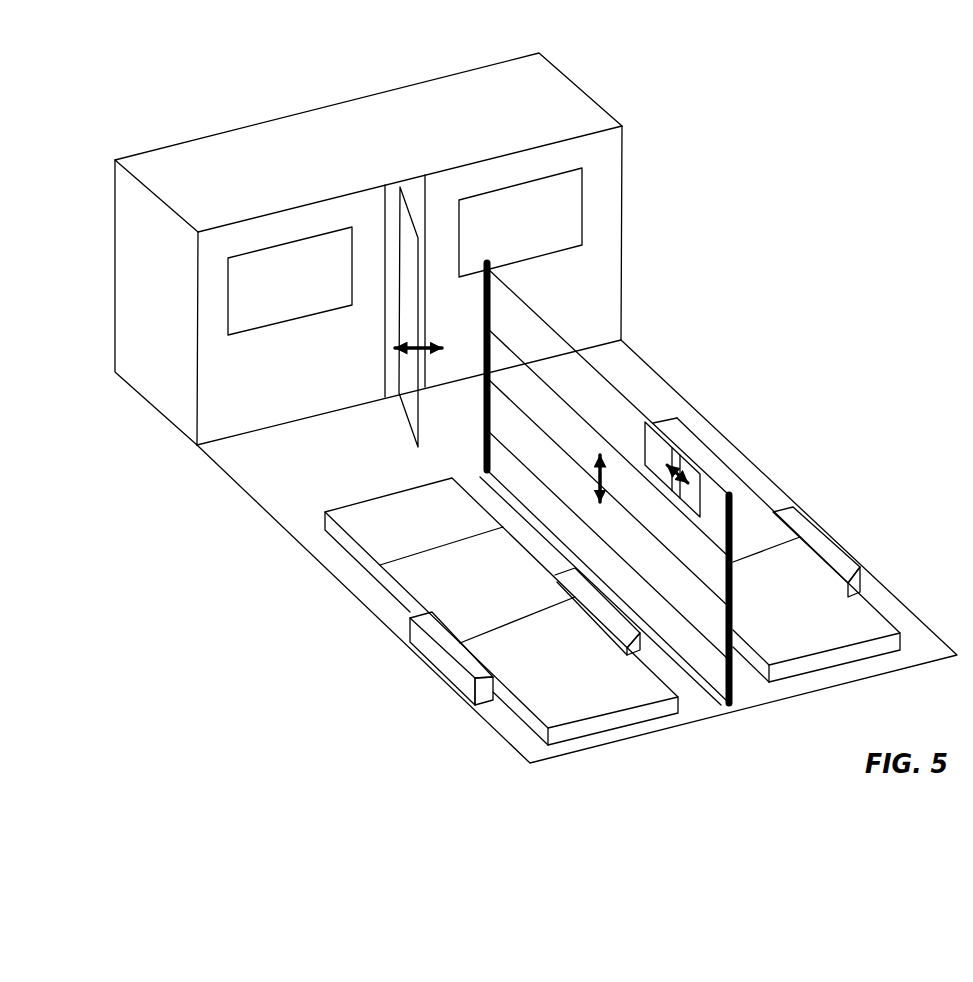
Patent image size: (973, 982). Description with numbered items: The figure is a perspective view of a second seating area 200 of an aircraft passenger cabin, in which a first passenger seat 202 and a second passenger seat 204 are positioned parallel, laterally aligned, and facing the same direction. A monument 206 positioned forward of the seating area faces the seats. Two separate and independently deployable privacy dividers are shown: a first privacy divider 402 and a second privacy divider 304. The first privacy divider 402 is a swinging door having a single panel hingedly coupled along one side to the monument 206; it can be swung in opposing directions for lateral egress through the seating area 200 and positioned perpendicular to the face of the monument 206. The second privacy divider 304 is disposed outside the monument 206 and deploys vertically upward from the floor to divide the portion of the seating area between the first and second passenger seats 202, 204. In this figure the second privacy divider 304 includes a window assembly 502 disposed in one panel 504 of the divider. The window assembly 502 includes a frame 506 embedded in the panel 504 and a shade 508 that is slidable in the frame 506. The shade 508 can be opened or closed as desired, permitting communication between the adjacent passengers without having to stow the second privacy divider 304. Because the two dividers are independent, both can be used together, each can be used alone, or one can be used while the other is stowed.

The second seating area 200 is at (683, 368).
The first passenger seat 202 is at (493, 653).
The second passenger seat 204 is at (818, 592).
The monument 206 is at (540, 100).
The second privacy divider 304 is at (603, 367).
The first privacy divider 402 is at (413, 203).
The window assembly 502 is at (708, 495).
The panel 504 is at (548, 340).
The frame 506 is at (689, 477).
The shade 508 is at (662, 452).